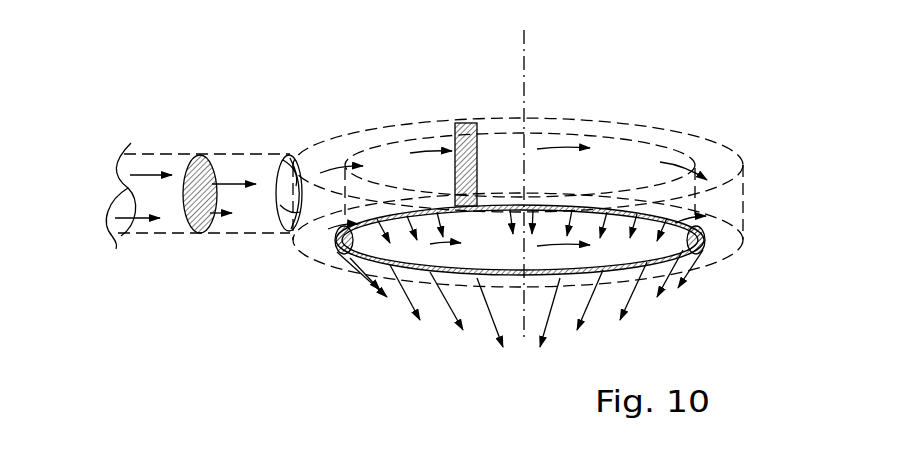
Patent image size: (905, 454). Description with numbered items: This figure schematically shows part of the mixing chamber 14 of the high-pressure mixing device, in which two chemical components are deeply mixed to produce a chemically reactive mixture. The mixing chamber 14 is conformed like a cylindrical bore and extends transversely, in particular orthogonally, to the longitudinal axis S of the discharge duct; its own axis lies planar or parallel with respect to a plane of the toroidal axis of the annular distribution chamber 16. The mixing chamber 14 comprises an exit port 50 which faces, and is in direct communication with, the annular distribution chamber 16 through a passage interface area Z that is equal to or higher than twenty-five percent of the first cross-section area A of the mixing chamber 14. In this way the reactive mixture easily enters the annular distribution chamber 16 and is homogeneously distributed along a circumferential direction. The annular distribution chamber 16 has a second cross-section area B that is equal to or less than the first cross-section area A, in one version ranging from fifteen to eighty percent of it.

The mixing chamber 14 is at (152, 197).
The first cross-section area A is at (195, 160).
The exit port 50 is at (288, 170).
The passage interface area Z is at (287, 207).
The second cross-section area B is at (462, 125).
The longitudinal axis S is at (525, 48).
The annular distribution chamber 16 is at (708, 162).